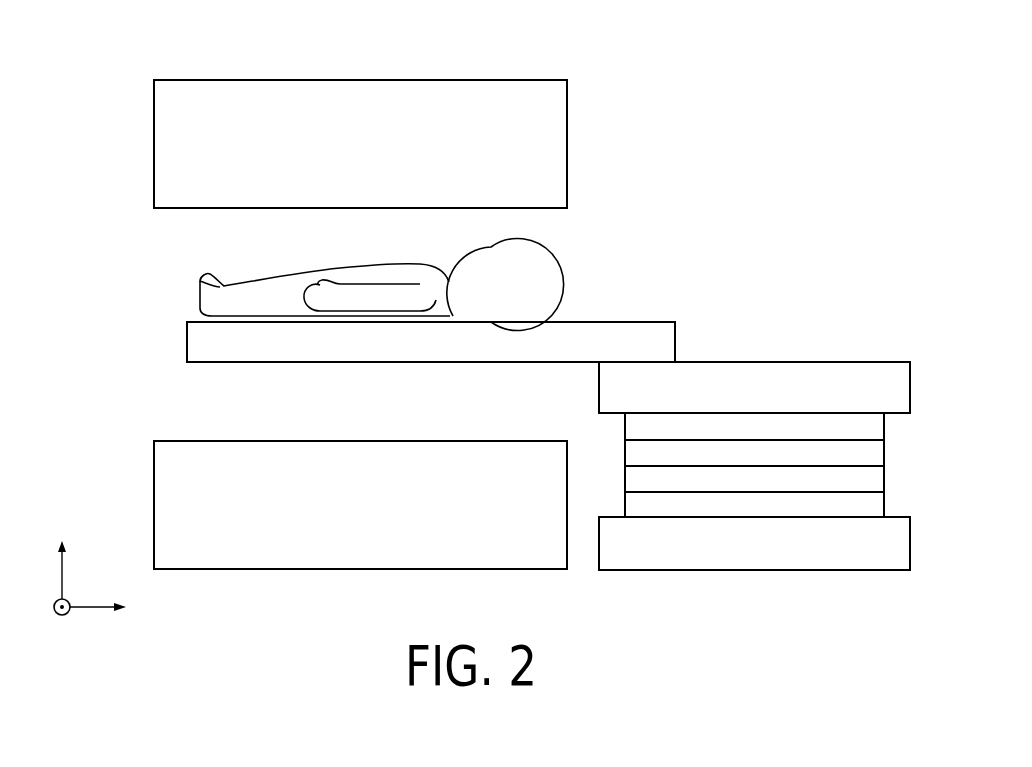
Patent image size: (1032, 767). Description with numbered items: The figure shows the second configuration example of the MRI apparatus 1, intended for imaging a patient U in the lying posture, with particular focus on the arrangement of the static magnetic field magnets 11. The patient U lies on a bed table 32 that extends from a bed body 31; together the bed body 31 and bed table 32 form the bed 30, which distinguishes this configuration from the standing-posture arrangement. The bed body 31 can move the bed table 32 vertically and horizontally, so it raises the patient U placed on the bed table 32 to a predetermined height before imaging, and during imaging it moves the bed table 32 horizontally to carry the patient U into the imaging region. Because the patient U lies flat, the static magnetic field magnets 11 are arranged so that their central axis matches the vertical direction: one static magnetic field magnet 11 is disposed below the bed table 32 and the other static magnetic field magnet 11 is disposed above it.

The MRI apparatus 1 is at (678, 84).
The static magnetic field magnets 11 is at (207, 79).
The bed 30 is at (777, 253).
The bed body 31 is at (737, 361).
The bed table 32 is at (635, 321).
The patient U is at (278, 277).